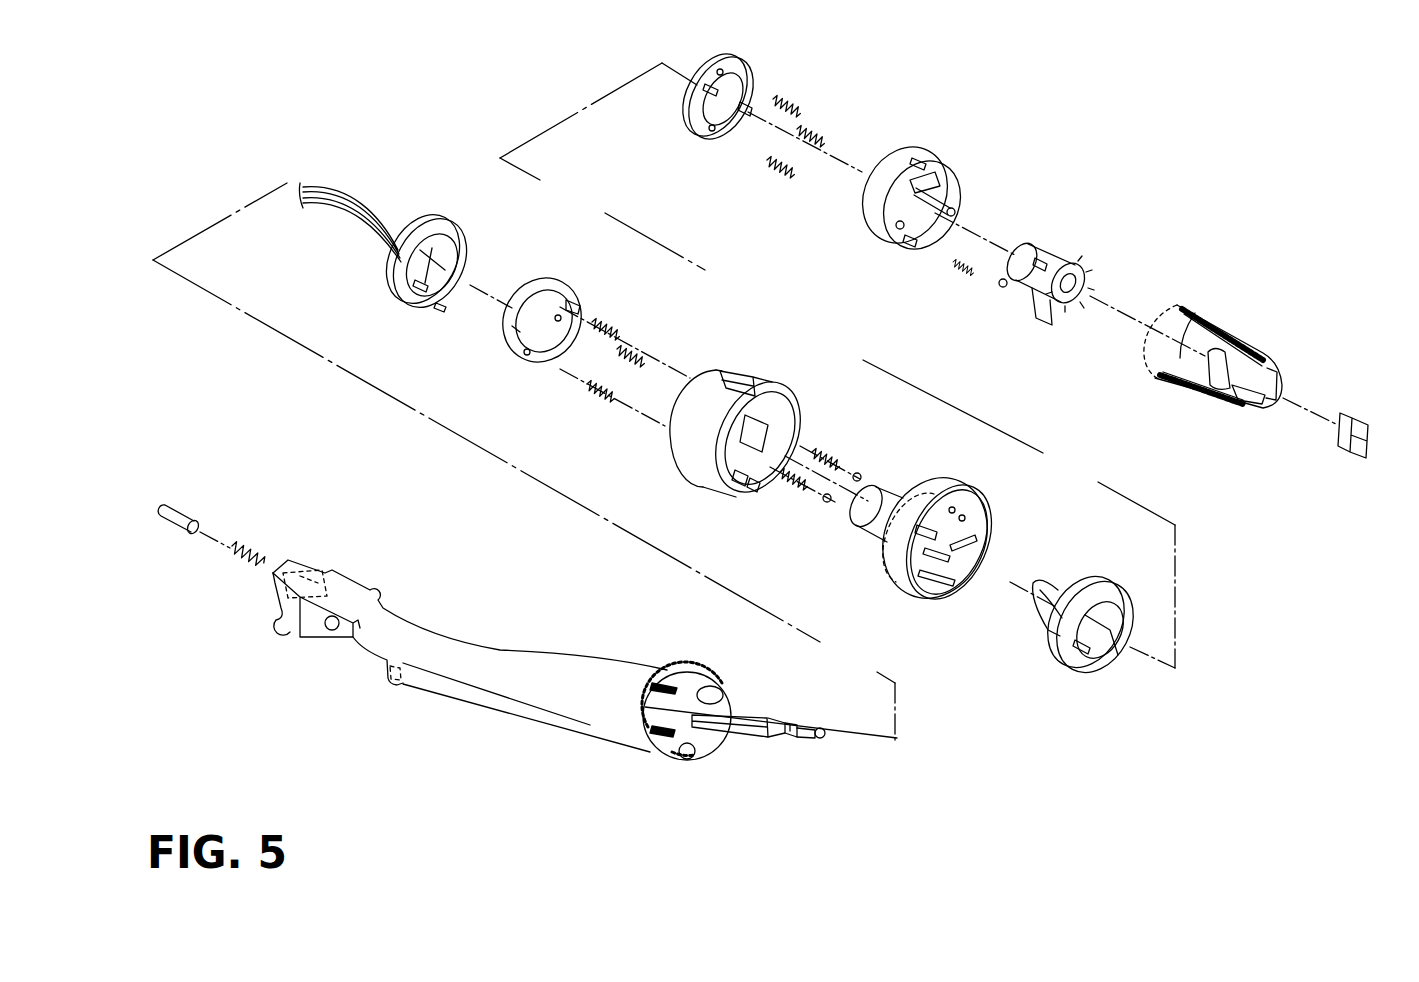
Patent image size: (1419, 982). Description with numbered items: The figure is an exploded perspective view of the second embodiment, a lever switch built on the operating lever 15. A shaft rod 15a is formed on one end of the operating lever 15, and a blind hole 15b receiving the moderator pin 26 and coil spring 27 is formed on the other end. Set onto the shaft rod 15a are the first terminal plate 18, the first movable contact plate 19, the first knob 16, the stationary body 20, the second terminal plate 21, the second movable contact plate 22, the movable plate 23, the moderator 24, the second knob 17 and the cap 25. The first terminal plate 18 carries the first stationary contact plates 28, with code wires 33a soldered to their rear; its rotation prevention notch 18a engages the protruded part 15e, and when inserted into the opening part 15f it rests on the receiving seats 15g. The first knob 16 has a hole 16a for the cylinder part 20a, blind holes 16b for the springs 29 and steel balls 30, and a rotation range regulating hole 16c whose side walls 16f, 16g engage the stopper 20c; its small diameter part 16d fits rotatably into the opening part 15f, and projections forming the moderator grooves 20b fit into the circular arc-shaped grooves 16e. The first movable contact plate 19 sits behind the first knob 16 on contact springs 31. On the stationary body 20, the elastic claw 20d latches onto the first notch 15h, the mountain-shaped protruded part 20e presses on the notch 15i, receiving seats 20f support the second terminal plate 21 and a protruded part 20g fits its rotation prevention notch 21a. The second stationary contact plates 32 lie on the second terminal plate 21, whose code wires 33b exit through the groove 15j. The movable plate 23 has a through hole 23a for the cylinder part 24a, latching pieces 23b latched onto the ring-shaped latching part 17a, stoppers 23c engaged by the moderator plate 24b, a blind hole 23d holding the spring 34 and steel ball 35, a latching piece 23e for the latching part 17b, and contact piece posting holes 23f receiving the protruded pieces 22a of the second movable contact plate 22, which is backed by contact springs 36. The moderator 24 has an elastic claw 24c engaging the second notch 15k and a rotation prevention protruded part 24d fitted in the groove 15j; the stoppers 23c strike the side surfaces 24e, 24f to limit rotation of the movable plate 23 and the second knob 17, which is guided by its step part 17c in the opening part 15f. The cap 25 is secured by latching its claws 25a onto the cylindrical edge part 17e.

The operating lever 15 is at (415, 691).
The shaft rod 15a is at (684, 707).
The blind hole 15b is at (312, 568).
The protruded part 15e is at (690, 760).
The opening part 15f is at (710, 688).
The receiving seats 15g is at (652, 688).
The first notch 15h is at (740, 708).
The notch 15i is at (742, 737).
The groove 15j is at (813, 740).
The second notch 15k is at (792, 721).
The first knob 16 is at (771, 378).
The hole 16a is at (778, 421).
The blind holes 16b is at (748, 433).
The rotation range regulating hole 16c is at (746, 490).
The small diameter part 16d is at (682, 440).
The circular arc-shaped grooves 16e is at (762, 404).
The side wall 16f is at (731, 472).
The side wall 16g is at (754, 488).
The second knob 17 is at (1233, 320).
The ring-shaped latching part 17a is at (1214, 392).
The latching part 17b is at (1188, 395).
The step part 17c is at (1157, 380).
The cylindrical edge part 17e is at (1252, 408).
The first terminal plate 18 is at (452, 220).
The rotation prevention notch 18a is at (440, 307).
The first movable contact plate 19 is at (572, 289).
The stationary body 20 is at (968, 486).
The cylinder part 20a is at (873, 525).
The moderator grooves 20b is at (928, 482).
The stopper 20c is at (885, 570).
The elastic claw 20d is at (973, 565).
The mountain-shaped protruded part 20e is at (903, 582).
The receiving seats 20f is at (958, 532).
The protruded part 20g is at (937, 572).
The second terminal plate 21 is at (1142, 603).
The rotation prevention notch 21a is at (1090, 677).
The second movable contact plate 22 is at (747, 57).
The protruded pieces 22a is at (718, 137).
The movable plate 23 is at (930, 152).
The through hole 23a is at (950, 175).
The latching pieces 23b is at (952, 208).
The stoppers 23c is at (898, 207).
The blind hole 23d is at (897, 230).
The latching piece 23e is at (907, 244).
The contact piece posting holes 23f is at (900, 165).
The moderator 24 is at (1045, 246).
The cylinder part 24a is at (1038, 328).
The moderator plate 24b is at (1063, 302).
The elastic claw 24c is at (1048, 263).
The rotation prevention protruded part 24d is at (1085, 275).
The side surface 24e is at (1036, 325).
The side surface 24f is at (1083, 287).
The cap 25 is at (1358, 418).
The claws 25a is at (1340, 415).
The moderator pin 26 is at (192, 516).
The coil spring 27 is at (258, 550).
The first stationary contact plates 28 is at (460, 278).
The springs 29 is at (812, 482).
The steel balls 30 is at (857, 482).
The contact springs 31 is at (644, 360).
The second stationary contact plates 32 is at (1130, 660).
The code wires 33a is at (384, 217).
The code wires 33b is at (1058, 588).
The spring 34 is at (968, 275).
The steel ball 35 is at (1002, 288).
The contact springs 36 is at (818, 126).